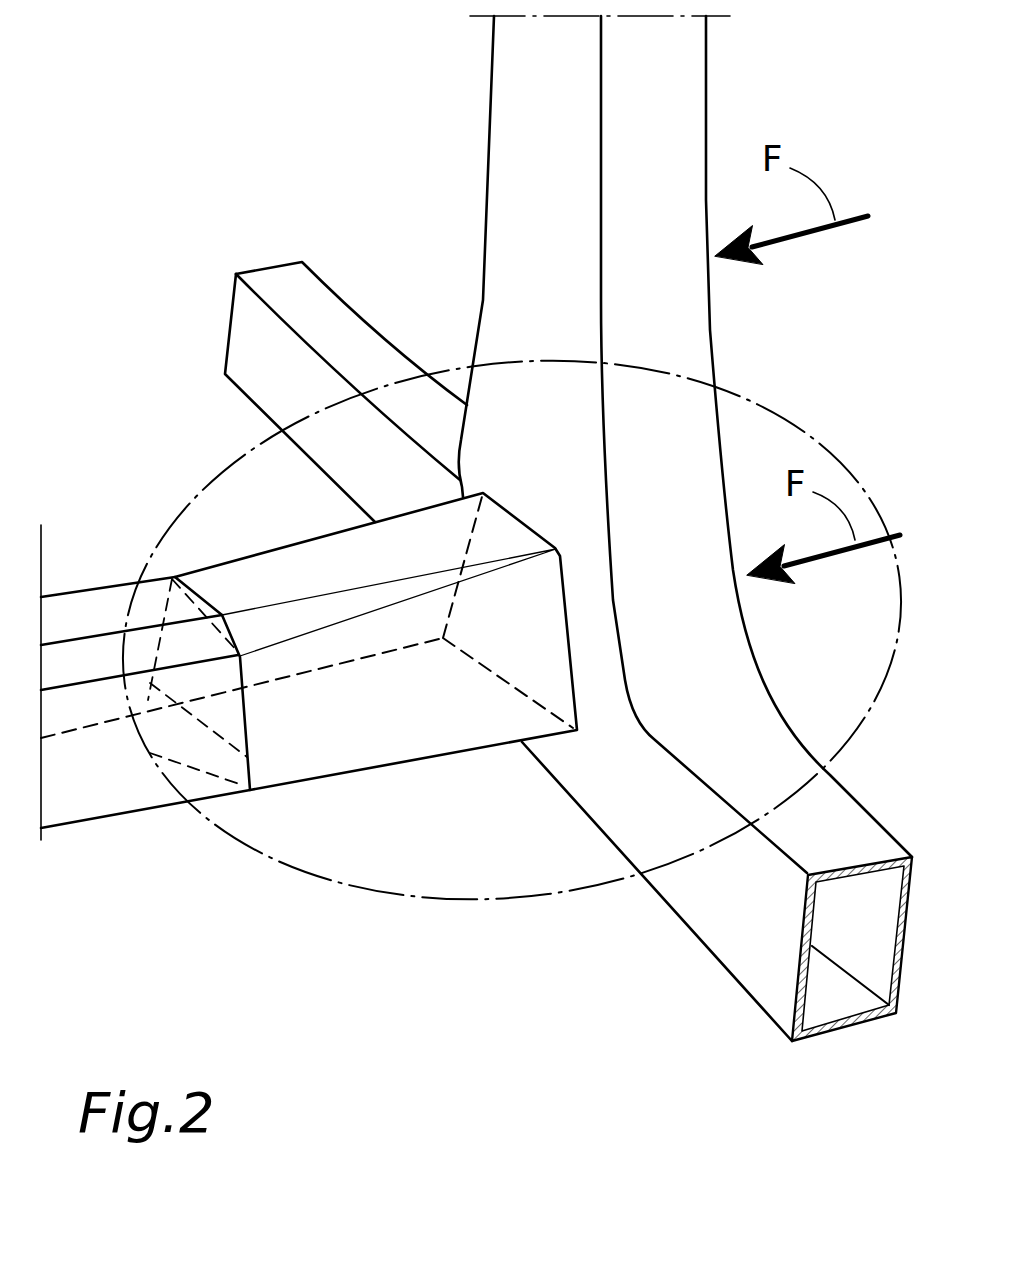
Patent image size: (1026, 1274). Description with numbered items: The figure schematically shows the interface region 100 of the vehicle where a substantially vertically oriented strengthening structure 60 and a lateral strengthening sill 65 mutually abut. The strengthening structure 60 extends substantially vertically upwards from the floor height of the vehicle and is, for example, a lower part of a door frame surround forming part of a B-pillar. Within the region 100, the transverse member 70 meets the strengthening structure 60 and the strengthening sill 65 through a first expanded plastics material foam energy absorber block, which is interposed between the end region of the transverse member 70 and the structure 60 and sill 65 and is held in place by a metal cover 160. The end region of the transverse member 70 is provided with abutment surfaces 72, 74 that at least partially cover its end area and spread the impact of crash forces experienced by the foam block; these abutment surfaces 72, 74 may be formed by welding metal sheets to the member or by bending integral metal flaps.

The strengthening structure 60 is at (565, 133).
The strengthening sill 65 is at (315, 315).
The transverse member 70 is at (87, 773).
The abutment surface 72 is at (195, 738).
The abutment surface 74 is at (195, 612).
The region 100 is at (407, 897).
The metal cover 160 is at (410, 692).